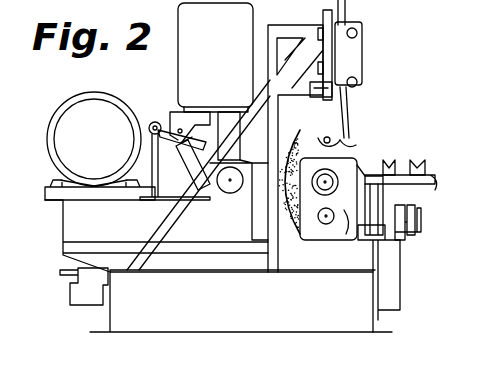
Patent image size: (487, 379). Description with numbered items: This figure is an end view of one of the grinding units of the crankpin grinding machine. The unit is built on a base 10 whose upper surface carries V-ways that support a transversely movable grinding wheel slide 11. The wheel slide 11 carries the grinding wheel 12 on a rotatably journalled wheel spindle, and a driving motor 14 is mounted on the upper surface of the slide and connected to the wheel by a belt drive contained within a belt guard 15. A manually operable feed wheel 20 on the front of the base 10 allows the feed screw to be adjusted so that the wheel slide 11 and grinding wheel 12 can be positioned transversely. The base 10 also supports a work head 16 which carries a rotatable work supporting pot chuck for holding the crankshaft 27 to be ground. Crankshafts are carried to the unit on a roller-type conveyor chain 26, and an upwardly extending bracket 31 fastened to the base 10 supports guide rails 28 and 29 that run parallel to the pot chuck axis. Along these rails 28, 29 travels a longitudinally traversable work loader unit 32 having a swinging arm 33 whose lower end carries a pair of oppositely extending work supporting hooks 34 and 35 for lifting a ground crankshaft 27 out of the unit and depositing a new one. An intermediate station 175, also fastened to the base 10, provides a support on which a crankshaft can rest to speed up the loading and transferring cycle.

The base 10 is at (118, 320).
The grinding wheel slide 11 is at (80, 219).
The grinding wheel 12 is at (292, 212).
The driving motor 14 is at (60, 126).
The belt guard 15 is at (148, 126).
The work head 16 is at (360, 164).
The intermediate station 175 is at (398, 162).
The feed wheel 20 is at (406, 230).
The conveyor chain 26 is at (436, 186).
The crankshaft 27 is at (331, 128).
The guide rail 28 is at (322, 30).
The guide rail 29 is at (306, 96).
The bracket 31 is at (268, 33).
The work loader unit 32 is at (371, 56).
The swinging arm 33 is at (343, 128).
The work supporting hook 34 is at (347, 146).
The work supporting hook 35 is at (324, 138).